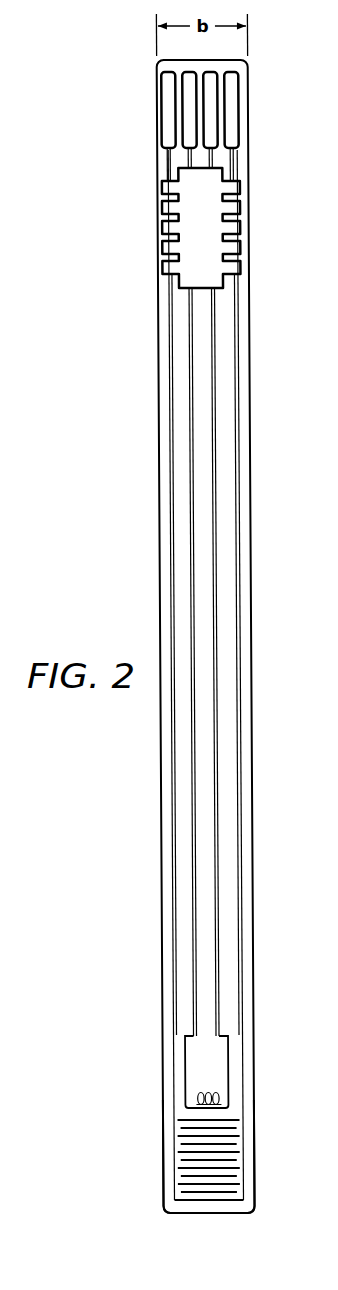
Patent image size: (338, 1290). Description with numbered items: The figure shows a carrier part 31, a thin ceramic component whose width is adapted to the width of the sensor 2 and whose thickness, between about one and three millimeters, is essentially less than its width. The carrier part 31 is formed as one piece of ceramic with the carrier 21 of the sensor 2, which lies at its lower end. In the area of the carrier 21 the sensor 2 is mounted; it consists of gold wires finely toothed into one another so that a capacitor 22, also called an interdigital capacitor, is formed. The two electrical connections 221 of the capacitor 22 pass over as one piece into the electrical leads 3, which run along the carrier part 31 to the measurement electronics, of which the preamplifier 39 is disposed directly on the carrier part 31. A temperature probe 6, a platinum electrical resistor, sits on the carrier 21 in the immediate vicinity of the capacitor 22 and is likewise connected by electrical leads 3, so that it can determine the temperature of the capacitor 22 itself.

The sensor 2 is at (164, 1166).
The carrier 21 is at (249, 1185).
The capacitor 22 is at (202, 1202).
The electrical connections 221 is at (168, 1103).
The electrical leads 3 is at (188, 481).
The carrier part 31 is at (250, 829).
The preamplifier 39 is at (189, 243).
The temperature probe 6 is at (180, 1072).